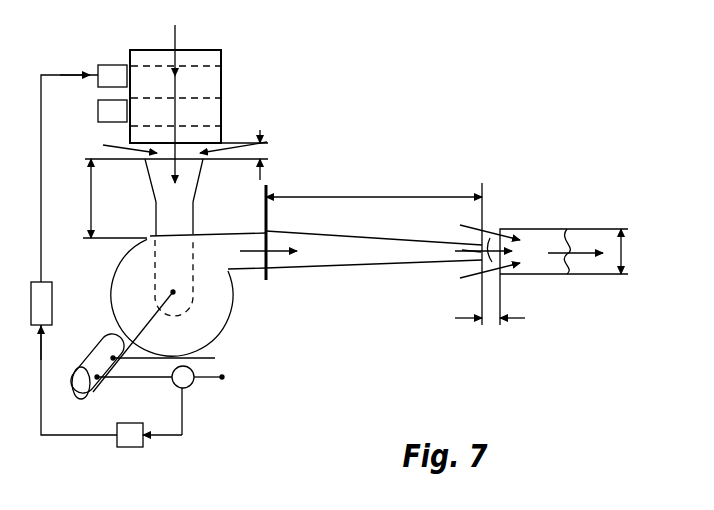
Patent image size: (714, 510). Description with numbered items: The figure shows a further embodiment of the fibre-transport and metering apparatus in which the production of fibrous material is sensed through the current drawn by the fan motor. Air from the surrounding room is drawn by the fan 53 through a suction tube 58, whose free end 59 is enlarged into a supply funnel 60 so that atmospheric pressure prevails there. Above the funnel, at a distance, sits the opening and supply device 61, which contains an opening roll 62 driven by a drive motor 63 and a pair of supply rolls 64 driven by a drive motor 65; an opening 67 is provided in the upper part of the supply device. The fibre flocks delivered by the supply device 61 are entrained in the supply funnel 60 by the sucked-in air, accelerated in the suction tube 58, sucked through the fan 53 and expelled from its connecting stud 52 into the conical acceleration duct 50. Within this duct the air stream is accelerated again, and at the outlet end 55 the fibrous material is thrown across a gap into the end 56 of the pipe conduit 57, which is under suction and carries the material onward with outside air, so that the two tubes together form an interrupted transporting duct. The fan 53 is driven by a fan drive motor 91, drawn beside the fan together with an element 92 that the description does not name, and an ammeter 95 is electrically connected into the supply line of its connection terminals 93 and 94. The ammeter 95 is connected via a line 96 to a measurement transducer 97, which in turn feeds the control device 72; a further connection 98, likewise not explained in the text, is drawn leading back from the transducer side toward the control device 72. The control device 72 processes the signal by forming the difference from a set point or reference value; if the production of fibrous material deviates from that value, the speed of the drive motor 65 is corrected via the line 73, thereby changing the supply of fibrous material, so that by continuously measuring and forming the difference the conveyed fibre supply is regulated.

The conical acceleration duct 50 is at (387, 264).
The connecting stud 52 is at (263, 274).
The fan 53 is at (115, 272).
The outlet end of acceleration duct 55 is at (472, 251).
The end of duct 56 is at (492, 238).
The pipe conduit 57 is at (540, 229).
The suction tube 58 is at (193, 217).
The free end of suction tube 59 is at (145, 160).
The supply funnel 60 is at (151, 190).
The opening and supply device 61 is at (221, 57).
The opening roll 62 is at (217, 112).
The drive motor 63 is at (110, 108).
The pair of supply rolls 64 is at (213, 78).
The drive motor 65 is at (110, 73).
The opening 67 is at (182, 58).
The control device 72 is at (52, 318).
The line 73 is at (45, 246).
The fan drive motor 91 is at (93, 389).
The light beam 92 is at (152, 318).
The connection terminal 93 is at (222, 377).
The connection terminal 94 is at (215, 358).
The ammeter 95 is at (197, 385).
The line 96 is at (182, 422).
The measurement transducer 97 is at (137, 440).
The feedback line 98 is at (78, 436).